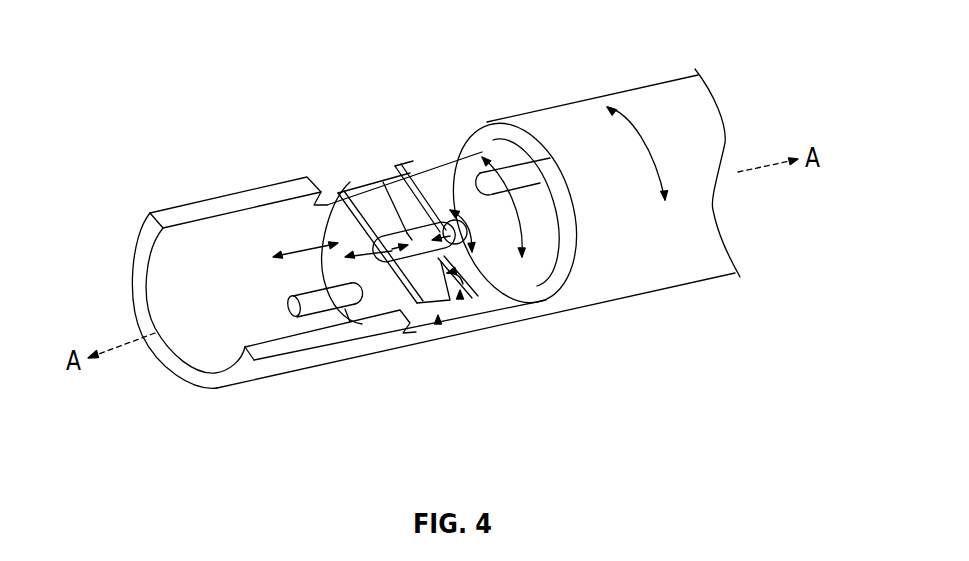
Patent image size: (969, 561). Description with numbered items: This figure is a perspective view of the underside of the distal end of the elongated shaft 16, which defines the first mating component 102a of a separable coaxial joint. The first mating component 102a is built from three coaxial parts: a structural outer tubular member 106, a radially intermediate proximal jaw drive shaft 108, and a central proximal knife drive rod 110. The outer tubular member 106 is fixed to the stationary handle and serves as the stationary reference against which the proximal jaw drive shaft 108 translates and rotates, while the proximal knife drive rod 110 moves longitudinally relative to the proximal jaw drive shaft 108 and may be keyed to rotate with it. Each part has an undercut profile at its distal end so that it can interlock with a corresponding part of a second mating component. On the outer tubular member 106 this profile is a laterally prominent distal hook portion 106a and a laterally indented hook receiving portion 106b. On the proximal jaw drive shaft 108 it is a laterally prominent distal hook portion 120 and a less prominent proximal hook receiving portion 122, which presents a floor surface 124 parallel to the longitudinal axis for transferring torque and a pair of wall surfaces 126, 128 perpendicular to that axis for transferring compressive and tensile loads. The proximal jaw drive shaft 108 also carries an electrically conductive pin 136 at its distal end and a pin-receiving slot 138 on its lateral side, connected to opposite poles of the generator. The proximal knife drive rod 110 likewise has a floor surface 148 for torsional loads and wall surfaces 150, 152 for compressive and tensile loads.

The elongated shaft 16 is at (699, 59).
The first mating component 102a is at (297, 122).
The outer tubular member 106 is at (630, 263).
The distal hook portion 106a is at (173, 220).
The hook receiving portion 106b is at (320, 187).
The proximal jaw drive shaft 108 is at (554, 270).
The proximal knife drive rod 110 is at (531, 272).
The distal hook portion 120 is at (447, 300).
The proximal hook receiving portion 122 is at (440, 285).
The floor surface 124 is at (383, 193).
The wall surface 126 is at (447, 177).
The wall surface 128 is at (467, 272).
The electrically conductive pin 136 is at (307, 302).
The electrically conductive pin-receiving slot 138 is at (528, 177).
The floor surface 148 is at (402, 193).
The wall surface 150 is at (483, 270).
The wall surface 152 is at (430, 278).